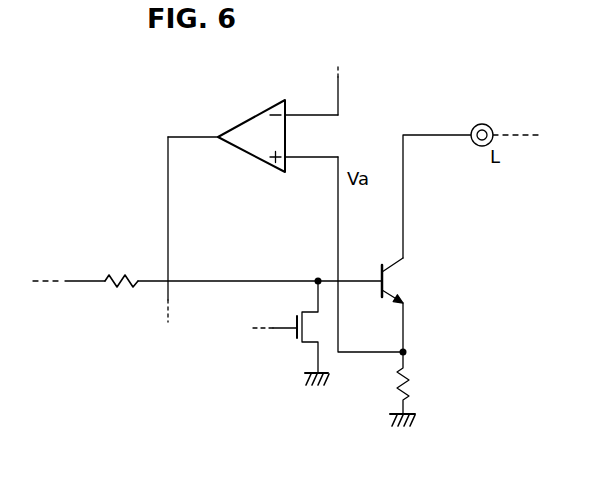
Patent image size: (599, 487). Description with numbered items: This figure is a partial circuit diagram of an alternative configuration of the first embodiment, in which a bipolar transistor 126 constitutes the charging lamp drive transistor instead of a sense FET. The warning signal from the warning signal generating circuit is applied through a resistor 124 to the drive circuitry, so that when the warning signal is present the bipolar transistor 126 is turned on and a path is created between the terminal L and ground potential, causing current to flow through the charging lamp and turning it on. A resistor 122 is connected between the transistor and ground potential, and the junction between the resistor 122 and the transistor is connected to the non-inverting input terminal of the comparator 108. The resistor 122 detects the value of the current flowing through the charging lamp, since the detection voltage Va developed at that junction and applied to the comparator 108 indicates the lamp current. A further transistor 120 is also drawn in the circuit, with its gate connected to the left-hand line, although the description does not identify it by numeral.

The comparator 108 is at (245, 121).
The resistor 124 is at (112, 272).
The MOS transistor 120 is at (293, 340).
The resistor 122 is at (400, 391).
The bipolar transistor 126 is at (397, 265).